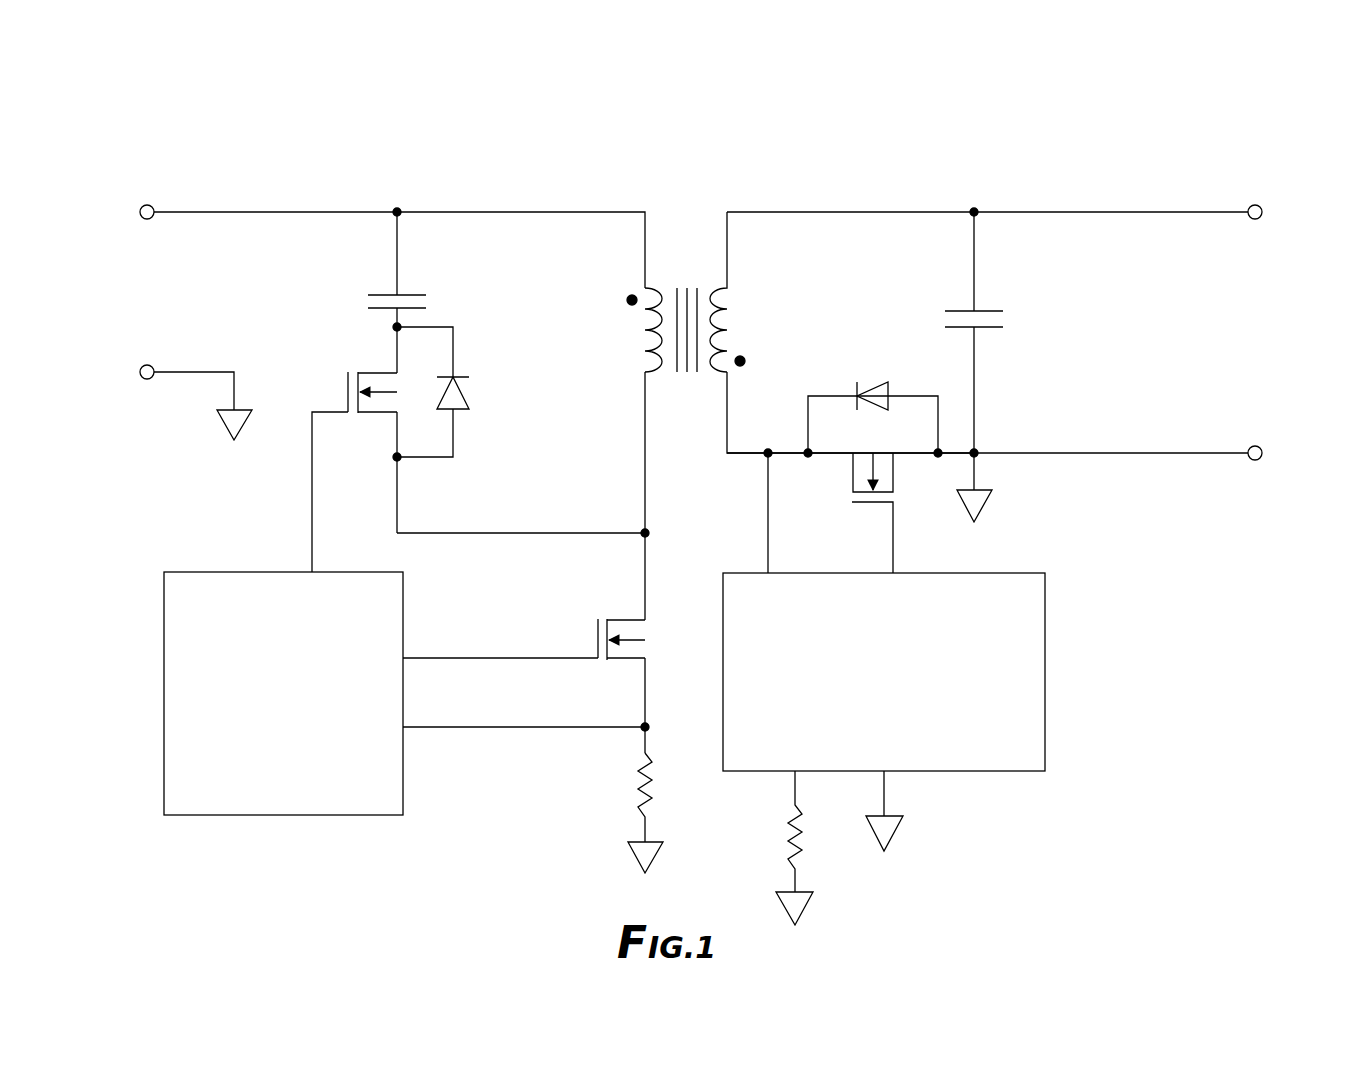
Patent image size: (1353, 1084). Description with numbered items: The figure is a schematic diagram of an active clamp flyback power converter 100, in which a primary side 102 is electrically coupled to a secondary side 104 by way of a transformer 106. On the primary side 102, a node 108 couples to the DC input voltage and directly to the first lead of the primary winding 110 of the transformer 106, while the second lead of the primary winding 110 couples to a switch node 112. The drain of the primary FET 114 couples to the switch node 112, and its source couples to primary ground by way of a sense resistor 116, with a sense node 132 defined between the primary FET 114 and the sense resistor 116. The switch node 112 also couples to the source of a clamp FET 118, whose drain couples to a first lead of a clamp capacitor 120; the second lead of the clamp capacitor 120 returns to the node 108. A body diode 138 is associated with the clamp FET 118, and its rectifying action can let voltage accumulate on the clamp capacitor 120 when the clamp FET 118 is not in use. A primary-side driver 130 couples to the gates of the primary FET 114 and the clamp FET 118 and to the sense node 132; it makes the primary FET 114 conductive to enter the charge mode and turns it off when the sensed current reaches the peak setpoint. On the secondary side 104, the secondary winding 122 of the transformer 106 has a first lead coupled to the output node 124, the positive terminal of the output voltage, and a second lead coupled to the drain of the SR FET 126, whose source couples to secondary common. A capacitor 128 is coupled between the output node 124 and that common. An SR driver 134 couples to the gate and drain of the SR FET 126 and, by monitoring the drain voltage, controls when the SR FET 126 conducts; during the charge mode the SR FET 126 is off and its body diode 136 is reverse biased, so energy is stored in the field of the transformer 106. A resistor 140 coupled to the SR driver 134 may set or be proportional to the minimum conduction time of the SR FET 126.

The power converter 100 is at (168, 105).
The primary side 102 is at (532, 168).
The secondary side 104 is at (995, 195).
The transformer 106 is at (689, 258).
The node 108 is at (397, 212).
The primary winding 110 is at (598, 310).
The switch node 112 is at (645, 533).
The primary FET 114 is at (618, 605).
The sense resistor 116 is at (637, 800).
The clamp FET 118 is at (378, 425).
The clamp capacitor 120 is at (378, 293).
The secondary winding 122 is at (748, 320).
The output node 124 is at (978, 214).
The SR FET 126 is at (905, 472).
The capacitor 128 is at (990, 327).
The primary-side driver 130 is at (183, 815).
The sense node 132 is at (645, 727).
The SR driver 134 is at (862, 703).
The body diode 136 is at (866, 373).
The body diode 138 is at (467, 393).
The resistor 140 is at (795, 845).